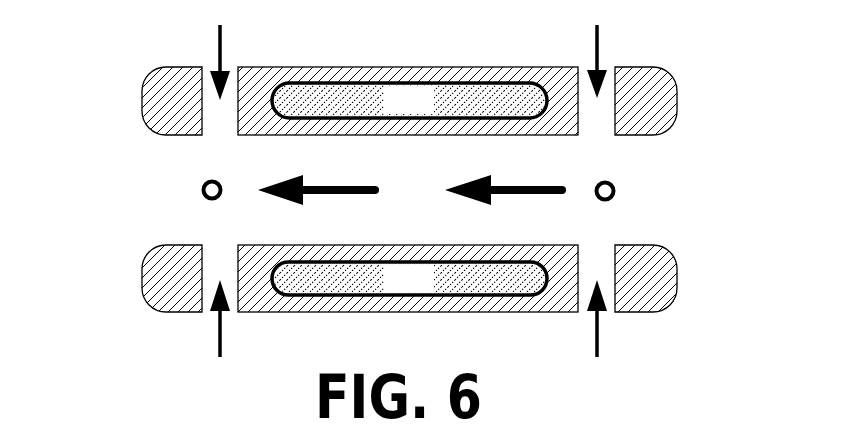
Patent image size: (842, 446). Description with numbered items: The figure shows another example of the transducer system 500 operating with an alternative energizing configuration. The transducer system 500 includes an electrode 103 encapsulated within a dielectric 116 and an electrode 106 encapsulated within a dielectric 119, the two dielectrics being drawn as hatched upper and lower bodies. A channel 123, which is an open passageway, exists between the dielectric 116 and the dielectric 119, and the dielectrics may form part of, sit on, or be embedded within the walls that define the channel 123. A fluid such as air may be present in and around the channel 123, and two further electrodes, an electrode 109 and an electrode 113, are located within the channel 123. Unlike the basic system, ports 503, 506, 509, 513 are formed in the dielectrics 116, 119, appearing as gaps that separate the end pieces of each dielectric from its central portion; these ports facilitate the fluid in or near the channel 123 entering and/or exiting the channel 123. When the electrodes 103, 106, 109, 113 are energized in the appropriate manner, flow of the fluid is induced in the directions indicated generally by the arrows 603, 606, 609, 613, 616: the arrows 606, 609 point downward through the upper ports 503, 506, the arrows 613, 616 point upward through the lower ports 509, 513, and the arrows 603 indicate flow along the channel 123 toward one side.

The transducer system 500 is at (674, 337).
The electrode 103 is at (389, 110).
The electrode 106 is at (389, 291).
The electrode 109 is at (207, 181).
The electrode 113 is at (608, 182).
The dielectric 116 is at (143, 85).
The dielectric 119 is at (143, 263).
The channel 123 is at (199, 220).
The port 503 is at (205, 62).
The port 506 is at (581, 63).
The port 509 is at (207, 318).
The port 513 is at (604, 318).
The arrow 603 is at (462, 183).
The arrow 606 is at (222, 42).
The arrow 609 is at (599, 42).
The arrow 613 is at (222, 338).
The arrow 616 is at (595, 335).